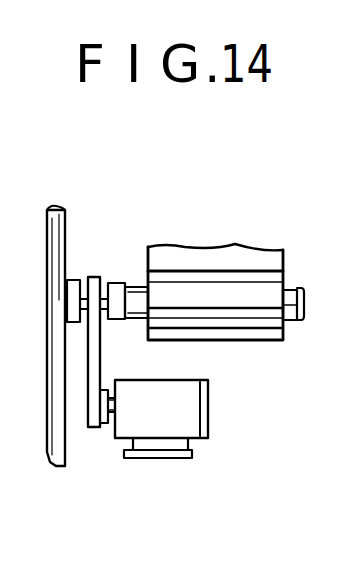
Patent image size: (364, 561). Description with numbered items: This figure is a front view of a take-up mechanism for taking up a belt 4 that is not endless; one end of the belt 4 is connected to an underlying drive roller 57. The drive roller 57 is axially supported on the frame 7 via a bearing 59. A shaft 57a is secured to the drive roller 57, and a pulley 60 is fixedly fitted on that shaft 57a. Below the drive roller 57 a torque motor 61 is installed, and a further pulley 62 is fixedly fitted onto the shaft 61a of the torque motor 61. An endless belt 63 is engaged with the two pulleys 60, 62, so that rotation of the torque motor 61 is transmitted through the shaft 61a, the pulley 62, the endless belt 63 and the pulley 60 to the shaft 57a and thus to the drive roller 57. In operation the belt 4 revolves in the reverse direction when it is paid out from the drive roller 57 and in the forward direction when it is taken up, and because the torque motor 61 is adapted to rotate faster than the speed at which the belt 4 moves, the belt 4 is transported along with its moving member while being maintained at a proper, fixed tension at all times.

The belt 4 is at (236, 250).
The frame 7 is at (57, 206).
The drive roller 57 is at (290, 288).
The shaft 57a is at (130, 287).
The bearing 59 is at (74, 277).
The pulley 60 is at (106, 282).
The torque motor 61 is at (185, 415).
The shaft 61a is at (111, 421).
The pulley 62 is at (88, 402).
The endless belt 63 is at (100, 355).